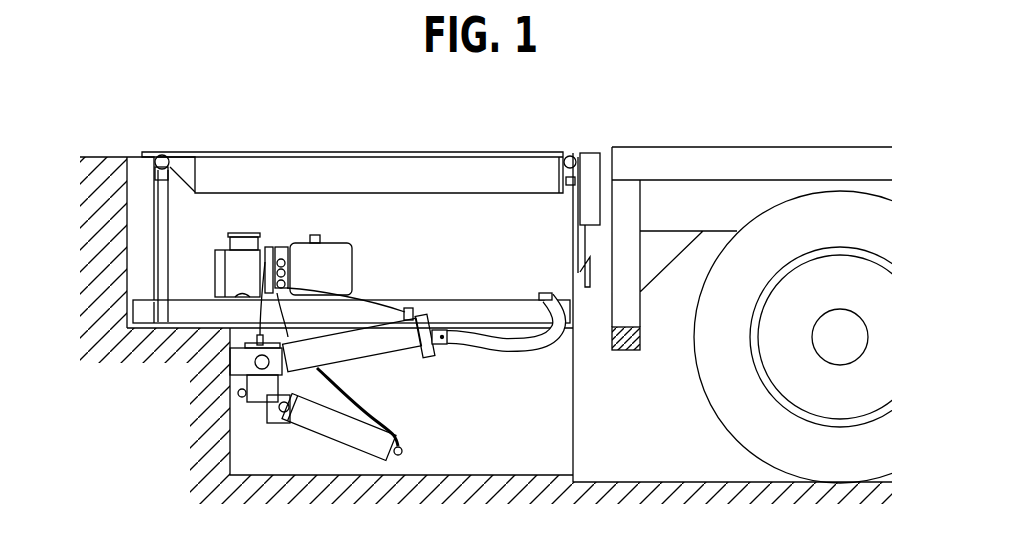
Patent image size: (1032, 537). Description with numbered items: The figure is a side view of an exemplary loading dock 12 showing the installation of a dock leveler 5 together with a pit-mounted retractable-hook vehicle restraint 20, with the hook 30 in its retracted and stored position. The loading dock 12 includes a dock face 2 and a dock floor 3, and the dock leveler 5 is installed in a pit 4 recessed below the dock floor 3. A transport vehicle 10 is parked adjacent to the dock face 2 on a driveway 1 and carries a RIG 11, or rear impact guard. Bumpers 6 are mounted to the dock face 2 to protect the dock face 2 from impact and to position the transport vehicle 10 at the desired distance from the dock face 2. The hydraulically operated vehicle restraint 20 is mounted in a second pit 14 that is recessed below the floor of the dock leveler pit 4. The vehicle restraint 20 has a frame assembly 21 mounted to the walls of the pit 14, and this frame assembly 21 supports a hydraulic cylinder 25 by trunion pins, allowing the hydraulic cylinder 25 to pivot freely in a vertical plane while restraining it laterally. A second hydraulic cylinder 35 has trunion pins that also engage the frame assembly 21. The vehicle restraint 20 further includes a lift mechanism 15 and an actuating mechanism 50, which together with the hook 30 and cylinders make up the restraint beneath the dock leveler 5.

The driveway 1 is at (636, 482).
The dock face 2 is at (573, 460).
The dock floor 3 is at (110, 157).
The pit 4 is at (127, 282).
The dock leveler 5 is at (308, 153).
The bumpers 6 is at (588, 152).
The transport vehicle 10 is at (742, 120).
The RIG 11 is at (625, 352).
The loading dock 12 is at (425, 109).
The pit 14 is at (258, 445).
The lift mechanism 15 is at (413, 456).
The vehicle restraint 20 is at (522, 352).
The frame assembly 21 is at (230, 362).
The hydraulic cylinder 25 is at (372, 365).
The hook 30 is at (542, 353).
The second hydraulic cylinder 35 is at (355, 450).
The actuating mechanism 50 is at (215, 272).